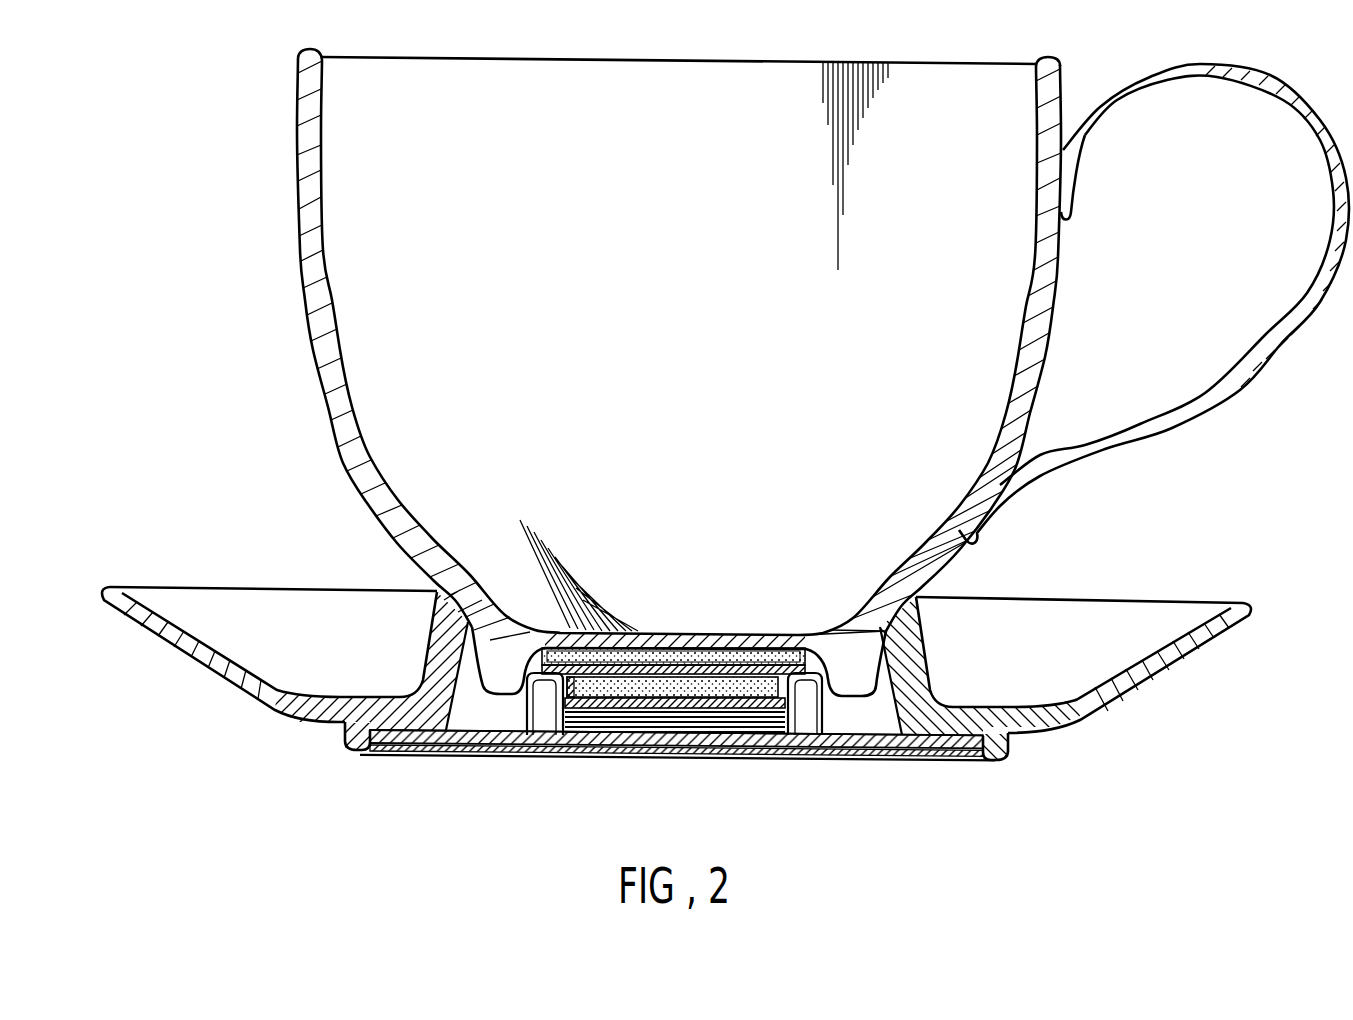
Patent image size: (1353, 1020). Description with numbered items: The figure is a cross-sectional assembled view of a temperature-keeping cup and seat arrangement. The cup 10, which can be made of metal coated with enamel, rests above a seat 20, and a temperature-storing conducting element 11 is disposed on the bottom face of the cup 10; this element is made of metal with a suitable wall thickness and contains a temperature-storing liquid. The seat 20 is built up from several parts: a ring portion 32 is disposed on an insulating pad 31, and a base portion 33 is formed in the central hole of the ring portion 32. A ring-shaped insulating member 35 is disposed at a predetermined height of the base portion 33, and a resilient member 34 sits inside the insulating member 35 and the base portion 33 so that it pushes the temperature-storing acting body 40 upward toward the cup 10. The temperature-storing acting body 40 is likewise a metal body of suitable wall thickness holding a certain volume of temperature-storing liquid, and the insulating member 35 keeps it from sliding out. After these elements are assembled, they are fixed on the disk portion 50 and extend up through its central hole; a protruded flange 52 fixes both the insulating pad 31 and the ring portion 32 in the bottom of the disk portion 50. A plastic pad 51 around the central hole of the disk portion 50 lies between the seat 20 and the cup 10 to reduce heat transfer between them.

The cup 10 is at (1027, 393).
The temperature-storing conducting element 11 is at (688, 633).
The seat 20 is at (1008, 651).
The insulating pad 31 is at (872, 752).
The ring portion 32 is at (843, 750).
The base portion 33 is at (800, 745).
The resilient member 34 is at (707, 727).
The insulating member 35 is at (555, 707).
The temperature-storing acting body 40 is at (615, 690).
The disk portion 50 is at (1098, 706).
The plastic pad 51 is at (900, 598).
The protruded flange 52 is at (998, 760).